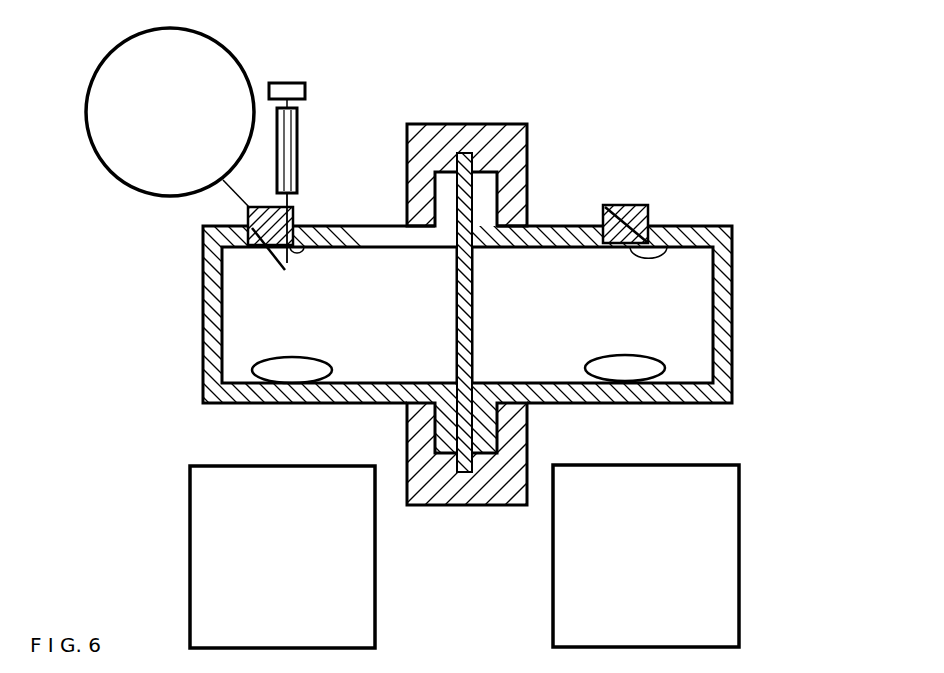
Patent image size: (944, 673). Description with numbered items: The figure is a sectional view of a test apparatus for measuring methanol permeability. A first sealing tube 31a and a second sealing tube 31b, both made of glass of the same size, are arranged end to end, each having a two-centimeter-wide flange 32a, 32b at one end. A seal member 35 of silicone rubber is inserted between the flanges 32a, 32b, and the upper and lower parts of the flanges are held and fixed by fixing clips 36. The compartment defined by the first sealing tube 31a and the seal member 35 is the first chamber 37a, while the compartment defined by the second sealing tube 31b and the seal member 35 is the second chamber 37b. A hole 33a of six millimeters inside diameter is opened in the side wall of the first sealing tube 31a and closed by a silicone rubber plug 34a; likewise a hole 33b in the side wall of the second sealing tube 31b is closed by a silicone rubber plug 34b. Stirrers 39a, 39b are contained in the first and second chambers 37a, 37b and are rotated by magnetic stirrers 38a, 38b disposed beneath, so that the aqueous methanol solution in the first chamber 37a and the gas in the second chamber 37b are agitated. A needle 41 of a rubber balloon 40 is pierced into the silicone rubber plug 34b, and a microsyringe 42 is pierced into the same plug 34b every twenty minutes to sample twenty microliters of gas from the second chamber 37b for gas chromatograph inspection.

The first sealing tube 31a is at (722, 225).
The second sealing tube 31b is at (212, 318).
The flange 32a is at (494, 205).
The flange 32b is at (437, 203).
The hole 33a is at (660, 245).
The hole 33b is at (301, 244).
The silicone rubber plug 34a is at (616, 202).
The silicone rubber plug 34b is at (248, 232).
The seal member 35 is at (463, 165).
The fixing clips 36 is at (524, 152).
The first chamber 37a is at (700, 358).
The second chamber 37b is at (233, 344).
The magnetic stirrer 38a is at (730, 590).
The magnetic stirrer 38b is at (365, 590).
The stirrer 39a is at (630, 375).
The stirrer 39b is at (298, 377).
The rubber balloon 40 is at (221, 55).
The needle 41 is at (267, 253).
The microsyringe 42 is at (298, 127).